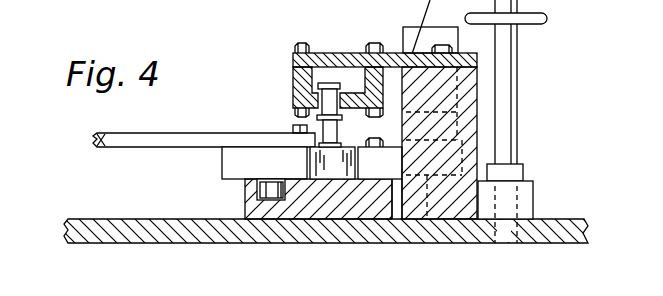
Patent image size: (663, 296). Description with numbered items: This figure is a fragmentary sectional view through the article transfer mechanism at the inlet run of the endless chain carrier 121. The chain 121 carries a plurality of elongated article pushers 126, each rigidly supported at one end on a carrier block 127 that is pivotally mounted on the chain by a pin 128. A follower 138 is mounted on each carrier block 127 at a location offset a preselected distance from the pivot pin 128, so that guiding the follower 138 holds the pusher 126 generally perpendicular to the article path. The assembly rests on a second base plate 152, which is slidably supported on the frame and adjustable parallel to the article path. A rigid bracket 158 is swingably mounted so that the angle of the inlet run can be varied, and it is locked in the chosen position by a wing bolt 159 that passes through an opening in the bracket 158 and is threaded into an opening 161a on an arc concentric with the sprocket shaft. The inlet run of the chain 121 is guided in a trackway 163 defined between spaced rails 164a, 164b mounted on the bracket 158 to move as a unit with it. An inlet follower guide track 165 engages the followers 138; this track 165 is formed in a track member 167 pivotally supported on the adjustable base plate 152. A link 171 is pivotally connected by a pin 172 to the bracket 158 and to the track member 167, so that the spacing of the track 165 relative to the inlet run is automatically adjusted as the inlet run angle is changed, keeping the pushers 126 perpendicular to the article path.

The endless chain carrier 121 is at (334, 84).
The article pusher 126 is at (153, 132).
The carrier block 127 is at (235, 160).
The pin 128 is at (324, 126).
The follower 138 is at (273, 188).
The second base plate 152 is at (123, 230).
The rigid bracket 158 is at (458, 206).
The wing bolt 159 is at (518, 118).
The opening 161a is at (525, 248).
The trackway 163 is at (302, 96).
The rail 164a is at (302, 100).
The rail 164b is at (353, 100).
The inlet follower guide track 165 is at (263, 204).
The track member 167 is at (333, 206).
The link 171 is at (388, 171).
The pin 172 is at (423, 222).